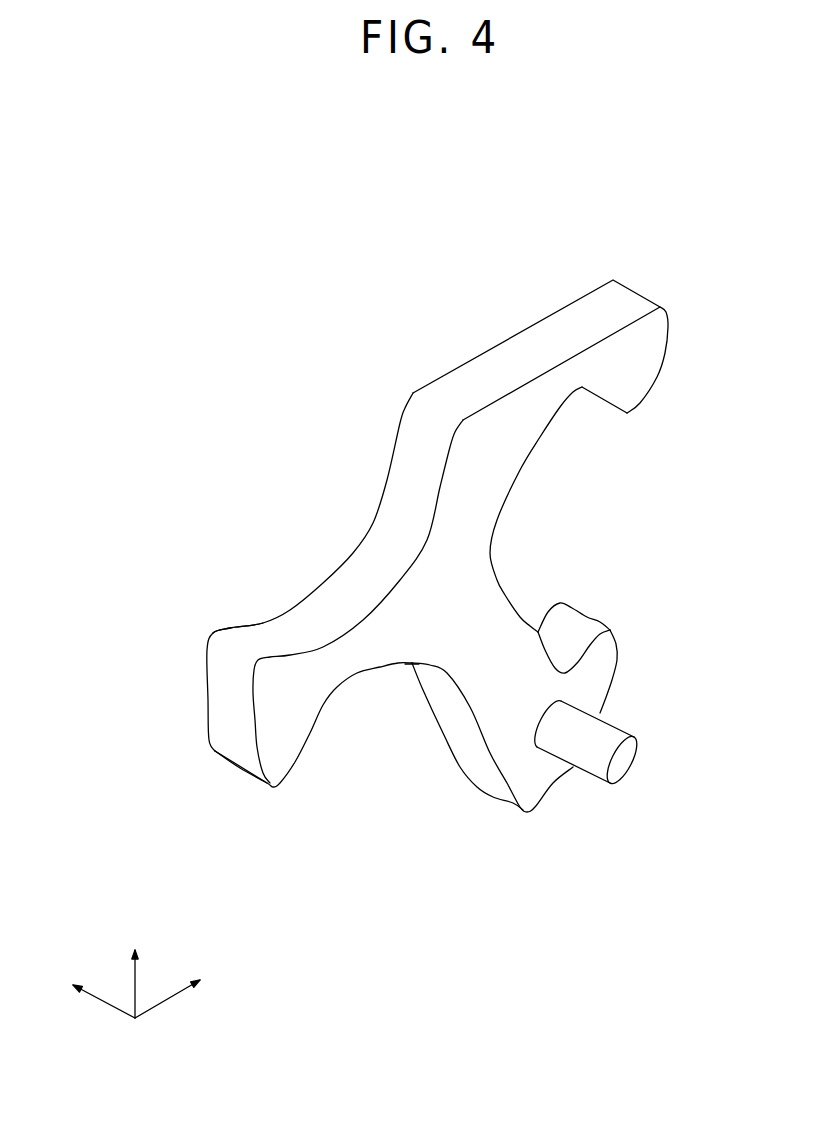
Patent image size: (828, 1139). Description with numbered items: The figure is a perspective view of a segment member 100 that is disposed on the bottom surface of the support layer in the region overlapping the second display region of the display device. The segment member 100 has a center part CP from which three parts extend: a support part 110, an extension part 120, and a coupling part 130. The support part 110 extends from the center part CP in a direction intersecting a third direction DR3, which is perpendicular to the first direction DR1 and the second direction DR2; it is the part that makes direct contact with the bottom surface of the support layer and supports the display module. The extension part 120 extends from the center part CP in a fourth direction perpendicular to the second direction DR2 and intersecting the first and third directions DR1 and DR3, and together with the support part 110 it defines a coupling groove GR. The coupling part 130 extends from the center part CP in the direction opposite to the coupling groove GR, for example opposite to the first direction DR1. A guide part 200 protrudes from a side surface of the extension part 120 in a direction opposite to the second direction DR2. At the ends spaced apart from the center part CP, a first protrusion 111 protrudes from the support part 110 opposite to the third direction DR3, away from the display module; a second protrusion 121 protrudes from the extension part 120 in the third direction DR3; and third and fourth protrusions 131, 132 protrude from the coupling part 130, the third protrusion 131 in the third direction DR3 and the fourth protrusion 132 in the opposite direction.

The segment member 100 is at (423, 605).
The support part 110 is at (543, 327).
The first protrusion 111 is at (620, 426).
The extension part 120 is at (483, 778).
The second protrusion 121 is at (620, 617).
The coupling part 130 is at (227, 706).
The third protrusion 131 is at (249, 638).
The fourth protrusion 132 is at (229, 783).
The coupling groove GR is at (578, 408).
The center part CP is at (394, 643).
The guide part 200 is at (627, 760).
The first direction DR1 is at (187, 994).
The second direction DR2 is at (81, 993).
The third direction DR3 is at (136, 969).